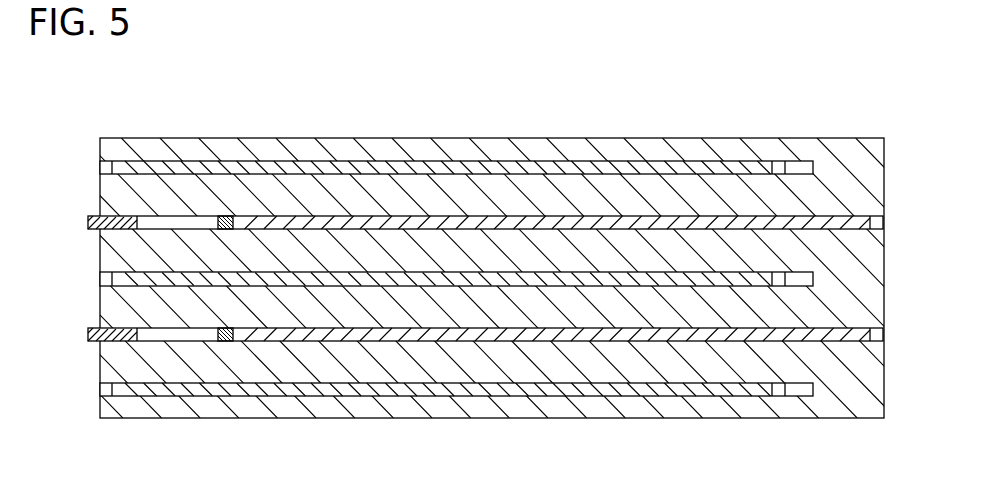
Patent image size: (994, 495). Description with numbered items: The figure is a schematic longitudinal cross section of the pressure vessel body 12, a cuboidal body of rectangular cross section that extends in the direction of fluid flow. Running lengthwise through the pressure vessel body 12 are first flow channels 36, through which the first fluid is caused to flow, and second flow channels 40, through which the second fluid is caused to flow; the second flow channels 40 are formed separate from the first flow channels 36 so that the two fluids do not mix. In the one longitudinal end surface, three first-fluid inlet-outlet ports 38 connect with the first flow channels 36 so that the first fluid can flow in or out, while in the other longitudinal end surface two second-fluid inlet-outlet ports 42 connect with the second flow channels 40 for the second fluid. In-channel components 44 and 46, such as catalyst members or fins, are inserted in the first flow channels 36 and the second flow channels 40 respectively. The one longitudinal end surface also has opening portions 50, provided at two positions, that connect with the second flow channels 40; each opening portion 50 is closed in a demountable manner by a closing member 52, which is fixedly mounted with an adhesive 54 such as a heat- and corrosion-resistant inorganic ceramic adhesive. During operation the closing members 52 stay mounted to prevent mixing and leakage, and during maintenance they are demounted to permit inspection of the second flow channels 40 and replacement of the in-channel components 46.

The pressure vessel body 12 is at (421, 137).
The first flow channel 36 is at (776, 383).
The first-fluid inlet-outlet port 38 is at (99, 171).
The second flow channel 40 is at (222, 328).
The second-fluid inlet-outlet port 42 is at (878, 327).
The in-channel component 44 is at (605, 383).
The in-channel component 46 is at (370, 335).
The opening portion 50 is at (118, 216).
The closing member 52 is at (87, 223).
The adhesive 54 is at (97, 217).